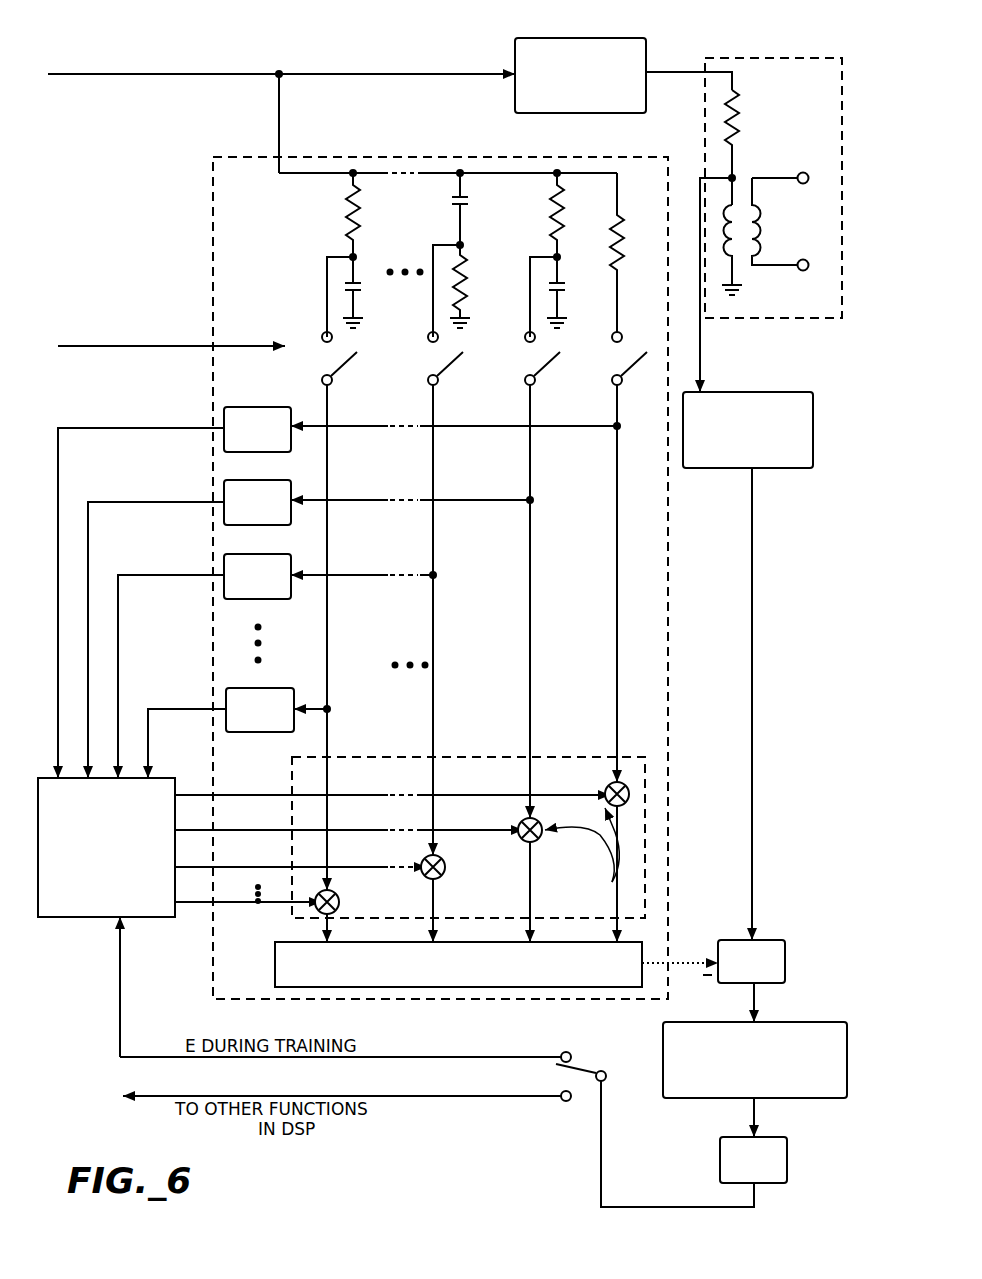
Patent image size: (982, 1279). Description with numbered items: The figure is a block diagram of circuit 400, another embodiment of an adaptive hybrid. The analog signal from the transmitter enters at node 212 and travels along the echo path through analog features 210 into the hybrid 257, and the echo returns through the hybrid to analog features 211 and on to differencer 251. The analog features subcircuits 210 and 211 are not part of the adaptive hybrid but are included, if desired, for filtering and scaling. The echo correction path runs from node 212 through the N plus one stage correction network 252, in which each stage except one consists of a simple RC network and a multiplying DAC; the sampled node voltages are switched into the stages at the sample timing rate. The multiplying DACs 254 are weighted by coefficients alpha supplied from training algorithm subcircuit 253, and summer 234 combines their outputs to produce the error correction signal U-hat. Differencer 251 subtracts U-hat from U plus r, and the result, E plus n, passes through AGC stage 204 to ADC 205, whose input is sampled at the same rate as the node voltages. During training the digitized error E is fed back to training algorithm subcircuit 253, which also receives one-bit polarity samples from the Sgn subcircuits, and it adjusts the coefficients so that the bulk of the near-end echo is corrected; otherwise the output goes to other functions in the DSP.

The AGC stage 204 is at (787, 1098).
The ADC 205 is at (770, 1183).
The analog features subcircuit 210 is at (625, 38).
The analog features subcircuit 211 is at (758, 392).
The node 212 is at (282, 74).
The summer 234 is at (570, 987).
The differencer 251 is at (768, 940).
The N+1 stage correction network 252 is at (670, 588).
The training algorithm subcircuit 253 is at (138, 917).
The multiplying DACs 254 is at (550, 757).
The hybrid 257 is at (785, 329).
The circuit 400 is at (780, 808).